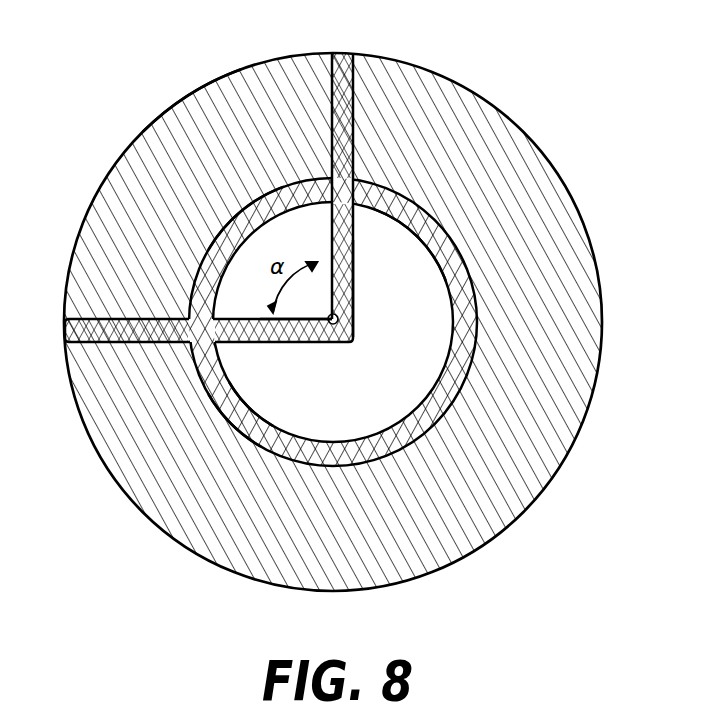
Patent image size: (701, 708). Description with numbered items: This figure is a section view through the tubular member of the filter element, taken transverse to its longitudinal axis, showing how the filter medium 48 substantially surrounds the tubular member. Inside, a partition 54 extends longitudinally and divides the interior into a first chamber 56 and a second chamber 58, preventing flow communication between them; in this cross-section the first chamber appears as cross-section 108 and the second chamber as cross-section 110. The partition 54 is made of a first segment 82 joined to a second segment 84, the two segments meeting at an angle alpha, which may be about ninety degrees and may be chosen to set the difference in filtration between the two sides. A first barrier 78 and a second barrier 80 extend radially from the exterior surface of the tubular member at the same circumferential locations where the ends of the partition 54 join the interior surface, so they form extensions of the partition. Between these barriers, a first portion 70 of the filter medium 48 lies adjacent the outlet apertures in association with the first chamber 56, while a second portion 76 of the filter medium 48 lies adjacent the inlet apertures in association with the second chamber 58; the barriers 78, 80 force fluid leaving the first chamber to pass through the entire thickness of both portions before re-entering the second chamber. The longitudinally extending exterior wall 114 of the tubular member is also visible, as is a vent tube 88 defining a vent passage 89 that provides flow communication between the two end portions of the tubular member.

The filter medium 48 is at (241, 82).
The first portion 70 is at (528, 445).
The second portion 76 is at (140, 145).
The second chamber 58 is at (225, 305).
The cross-section of second chamber 110 is at (233, 258).
The first segment 82 is at (472, 274).
The first chamber 56 is at (380, 222).
The cross-section of first chamber 108 is at (393, 255).
The second segment 84 is at (207, 367).
The exterior wall 114 is at (242, 366).
The second barrier 80 is at (358, 95).
The partition 54 is at (343, 307).
The first barrier 78 is at (93, 340).
The vent tube 88 is at (323, 318).
The vent passage 89 is at (343, 303).